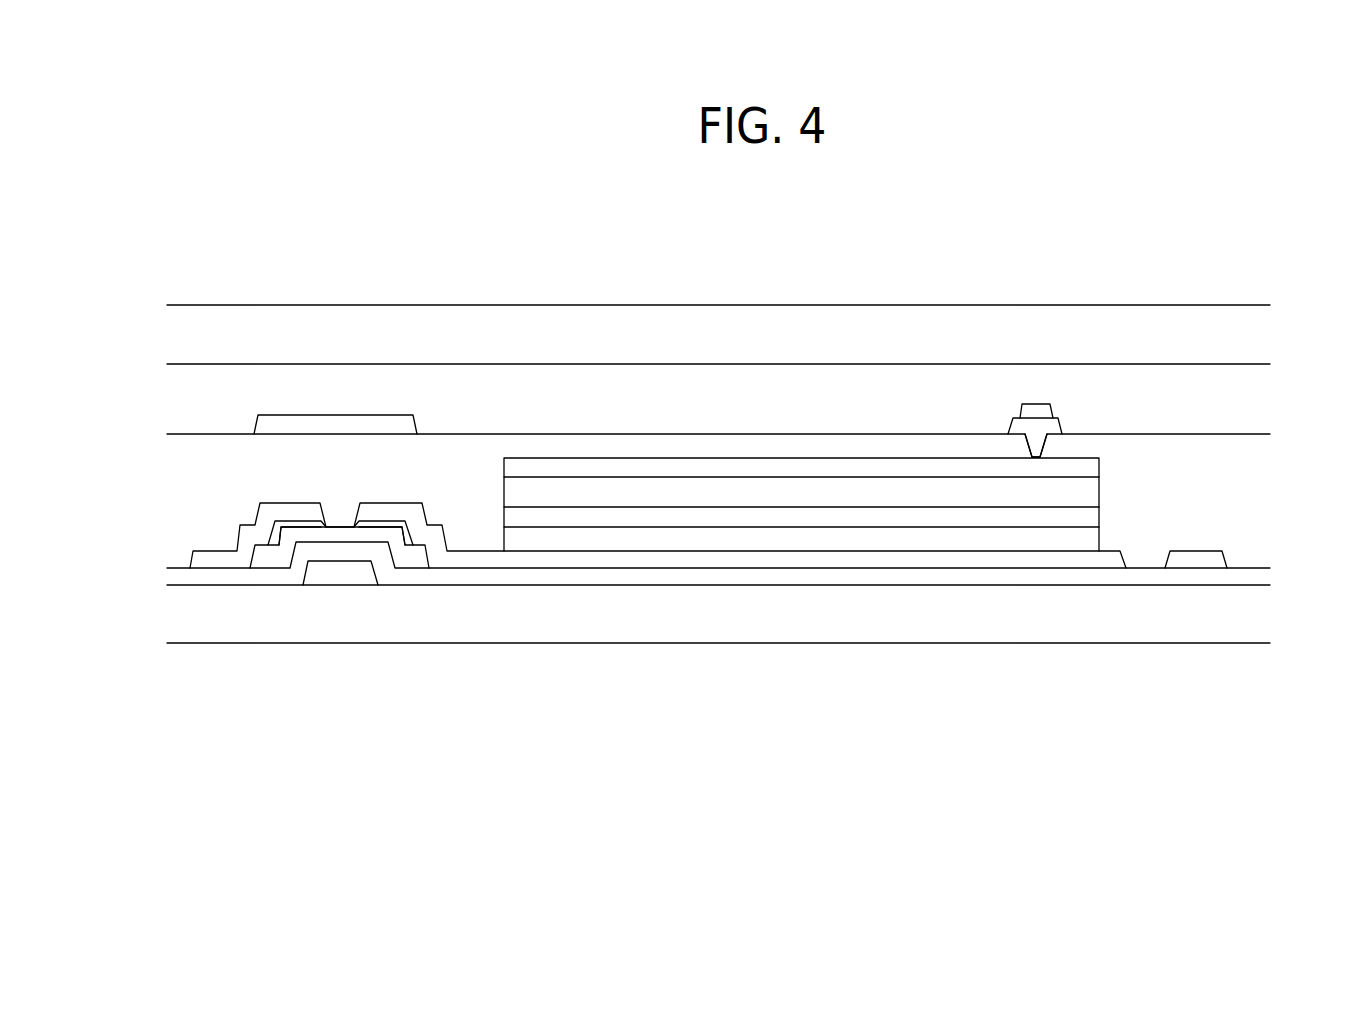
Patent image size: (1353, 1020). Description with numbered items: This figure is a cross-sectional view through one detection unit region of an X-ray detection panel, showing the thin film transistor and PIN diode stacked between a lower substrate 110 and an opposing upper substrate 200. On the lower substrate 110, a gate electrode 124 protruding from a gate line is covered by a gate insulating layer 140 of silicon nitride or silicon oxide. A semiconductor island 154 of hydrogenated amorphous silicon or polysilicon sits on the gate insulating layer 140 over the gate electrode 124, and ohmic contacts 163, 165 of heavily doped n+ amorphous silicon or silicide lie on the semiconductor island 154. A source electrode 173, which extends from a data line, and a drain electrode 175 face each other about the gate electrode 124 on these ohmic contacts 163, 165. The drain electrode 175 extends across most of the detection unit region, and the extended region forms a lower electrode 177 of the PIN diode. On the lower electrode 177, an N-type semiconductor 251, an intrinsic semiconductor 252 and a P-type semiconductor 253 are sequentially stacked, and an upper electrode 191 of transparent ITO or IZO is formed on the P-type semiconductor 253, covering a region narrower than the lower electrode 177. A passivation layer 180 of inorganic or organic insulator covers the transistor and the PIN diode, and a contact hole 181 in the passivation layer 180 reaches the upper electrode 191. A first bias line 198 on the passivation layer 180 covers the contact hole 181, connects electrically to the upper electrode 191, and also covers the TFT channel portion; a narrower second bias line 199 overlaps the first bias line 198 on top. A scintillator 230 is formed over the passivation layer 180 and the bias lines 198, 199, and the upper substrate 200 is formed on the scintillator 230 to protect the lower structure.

The lower substrate 110 is at (1262, 619).
The gate electrode 124 is at (327, 573).
The gate insulating layer 140 is at (1262, 581).
The semiconductor island 154 is at (367, 537).
The ohmic contact 163 is at (262, 548).
The ohmic contact 165 is at (420, 550).
The source electrode 173 is at (212, 558).
The drain electrode 175 is at (387, 513).
The lower electrode 177 is at (588, 557).
The passivation layer 180 is at (193, 499).
The contact hole 181 is at (1032, 452).
The upper electrode 191 is at (928, 465).
The first bias line 198 is at (333, 425).
The second bias line 199 is at (1020, 410).
The upper substrate 200 is at (1262, 337).
The scintillator 230 is at (1262, 400).
The N-type semiconductor 251 is at (672, 533).
The intrinsic semiconductor 252 is at (757, 514).
The P-type semiconductor 253 is at (843, 490).